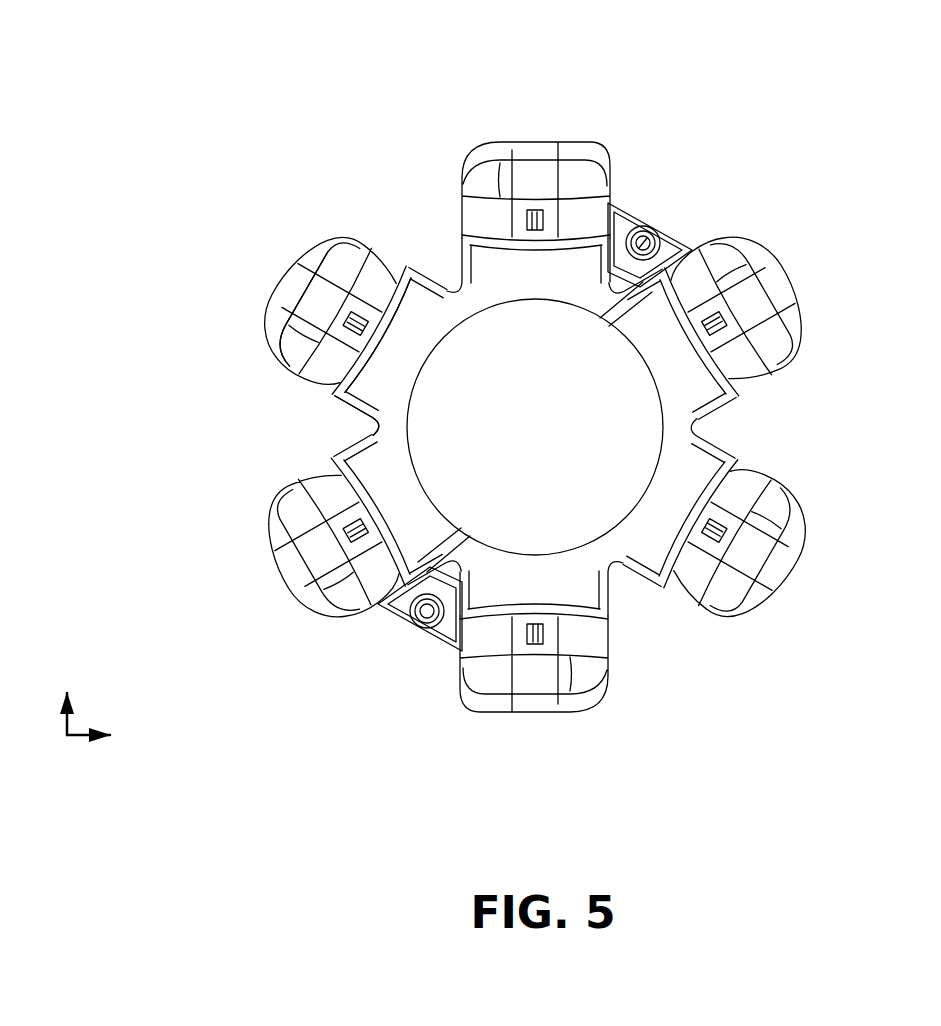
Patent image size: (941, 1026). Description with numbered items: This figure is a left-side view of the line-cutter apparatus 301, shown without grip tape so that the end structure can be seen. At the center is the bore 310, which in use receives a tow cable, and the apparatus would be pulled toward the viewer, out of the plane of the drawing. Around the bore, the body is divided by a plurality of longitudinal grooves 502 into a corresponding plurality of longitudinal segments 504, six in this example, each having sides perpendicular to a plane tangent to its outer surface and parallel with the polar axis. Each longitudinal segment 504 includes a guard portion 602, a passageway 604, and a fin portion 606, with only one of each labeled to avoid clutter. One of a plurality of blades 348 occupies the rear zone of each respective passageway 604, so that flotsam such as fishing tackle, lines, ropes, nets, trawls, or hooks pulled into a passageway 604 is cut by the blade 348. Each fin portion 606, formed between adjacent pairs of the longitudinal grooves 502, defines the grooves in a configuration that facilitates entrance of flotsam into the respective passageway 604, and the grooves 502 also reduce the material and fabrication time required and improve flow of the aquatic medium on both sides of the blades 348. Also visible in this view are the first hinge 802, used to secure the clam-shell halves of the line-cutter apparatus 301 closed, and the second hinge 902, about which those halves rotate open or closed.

The line-cutter apparatus 301 is at (158, 104).
The bore 310 is at (516, 439).
The blade 348 is at (360, 320).
The longitudinal grooves 502 is at (398, 184).
The longitudinal segments 504 is at (540, 116).
The guard portion 602 is at (412, 324).
The passageway 604 is at (292, 378).
The fin portion 606 is at (343, 257).
The first hinge 802 is at (684, 219).
The second hinge 902 is at (375, 641).